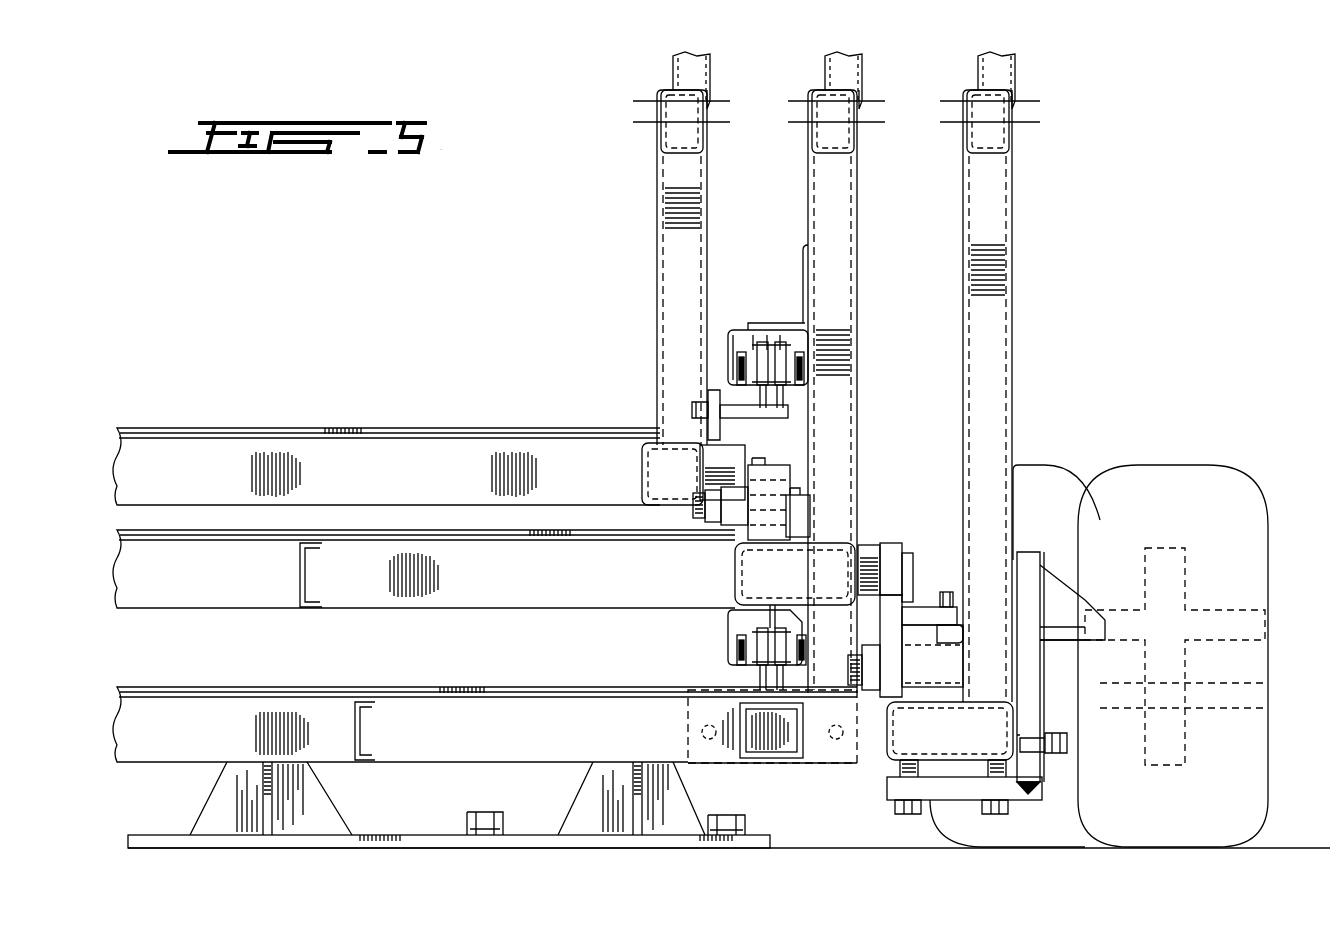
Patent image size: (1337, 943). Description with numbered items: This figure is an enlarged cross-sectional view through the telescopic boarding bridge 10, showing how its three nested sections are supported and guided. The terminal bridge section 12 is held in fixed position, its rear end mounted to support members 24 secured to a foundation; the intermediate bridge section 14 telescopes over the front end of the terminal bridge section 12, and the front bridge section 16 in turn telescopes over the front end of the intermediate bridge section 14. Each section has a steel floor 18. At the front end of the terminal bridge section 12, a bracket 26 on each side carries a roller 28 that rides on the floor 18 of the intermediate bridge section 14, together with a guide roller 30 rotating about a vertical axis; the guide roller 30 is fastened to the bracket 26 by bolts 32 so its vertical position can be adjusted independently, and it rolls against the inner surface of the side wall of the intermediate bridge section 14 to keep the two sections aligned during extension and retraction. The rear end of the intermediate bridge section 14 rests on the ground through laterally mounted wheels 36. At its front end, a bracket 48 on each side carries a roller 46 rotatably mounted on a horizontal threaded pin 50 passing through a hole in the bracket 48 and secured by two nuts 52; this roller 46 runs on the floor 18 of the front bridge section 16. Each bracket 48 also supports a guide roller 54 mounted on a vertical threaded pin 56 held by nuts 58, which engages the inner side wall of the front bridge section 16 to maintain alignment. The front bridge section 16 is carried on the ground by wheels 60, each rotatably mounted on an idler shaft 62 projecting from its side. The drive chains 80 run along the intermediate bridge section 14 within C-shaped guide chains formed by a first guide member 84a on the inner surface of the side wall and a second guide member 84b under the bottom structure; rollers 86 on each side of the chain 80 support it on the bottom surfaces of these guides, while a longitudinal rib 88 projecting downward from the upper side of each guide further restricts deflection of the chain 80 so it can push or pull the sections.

The telescopic boarding bridge 10 is at (1136, 196).
The terminal bridge section 12 is at (668, 68).
The intermediate bridge section 14 is at (868, 73).
The front bridge section 16 is at (1018, 81).
The floor 18 is at (380, 690).
The support members 24 is at (213, 804).
The brackets 26 is at (705, 455).
The roller 28 is at (770, 485).
The guide roller 30 is at (803, 520).
The bolts 32 is at (692, 505).
The wheels 36 is at (1040, 500).
The rollers 46 is at (927, 685).
The brackets 48 is at (882, 545).
The threaded pin 50 is at (848, 720).
The nuts 52 is at (868, 700).
The guide roller 54 is at (970, 655).
The threaded pins 56 is at (943, 600).
The nuts 58 is at (952, 593).
The wheels 60 is at (1202, 500).
The idler shaft 62 is at (1062, 677).
The chains 80 is at (800, 370).
The first guide member 84a is at (739, 330).
The second guide member 84b is at (732, 658).
The rollers 86 is at (738, 370).
The longitudinal rib 88 is at (777, 345).